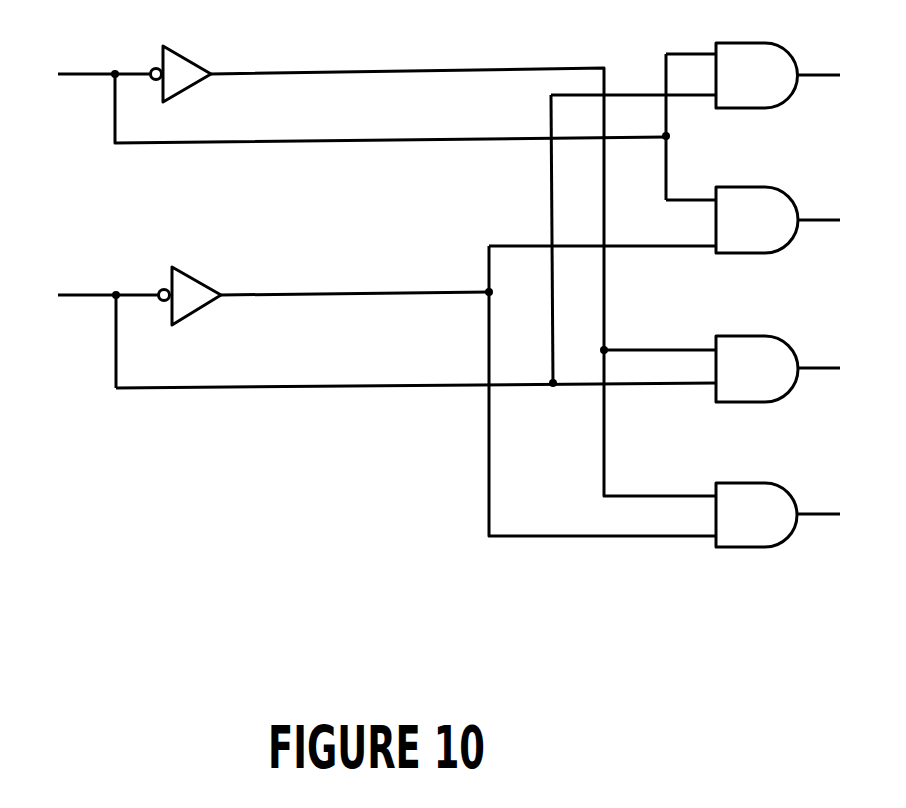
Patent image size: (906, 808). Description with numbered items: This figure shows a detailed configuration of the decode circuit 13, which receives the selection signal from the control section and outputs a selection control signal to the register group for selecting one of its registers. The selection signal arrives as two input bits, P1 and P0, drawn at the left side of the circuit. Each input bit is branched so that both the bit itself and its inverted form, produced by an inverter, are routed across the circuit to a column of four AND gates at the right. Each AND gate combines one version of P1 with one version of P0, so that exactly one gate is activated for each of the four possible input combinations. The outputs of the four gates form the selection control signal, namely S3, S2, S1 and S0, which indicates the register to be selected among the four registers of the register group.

The decode circuit 13 is at (449, 318).
The selection signal bit P1 is at (86, 74).
The selection signal bit P0 is at (90, 295).
The selection control signal S3 is at (796, 75).
The selection control signal S2 is at (796, 220).
The selection control signal S1 is at (796, 369).
The selection control signal S0 is at (796, 515).